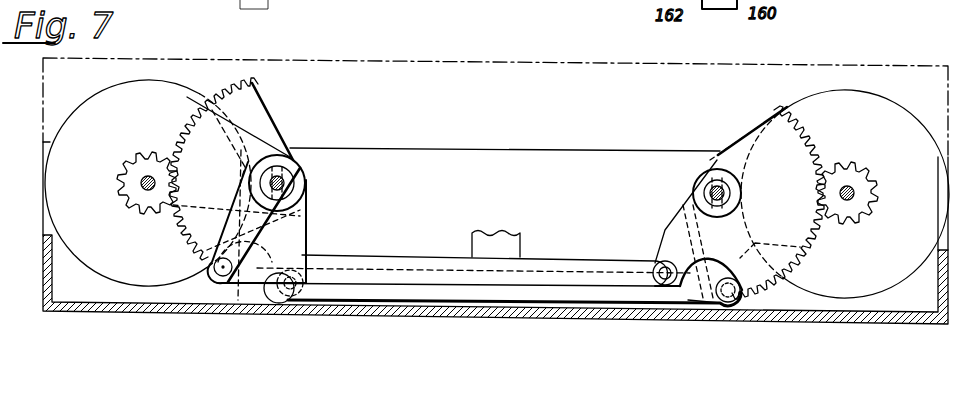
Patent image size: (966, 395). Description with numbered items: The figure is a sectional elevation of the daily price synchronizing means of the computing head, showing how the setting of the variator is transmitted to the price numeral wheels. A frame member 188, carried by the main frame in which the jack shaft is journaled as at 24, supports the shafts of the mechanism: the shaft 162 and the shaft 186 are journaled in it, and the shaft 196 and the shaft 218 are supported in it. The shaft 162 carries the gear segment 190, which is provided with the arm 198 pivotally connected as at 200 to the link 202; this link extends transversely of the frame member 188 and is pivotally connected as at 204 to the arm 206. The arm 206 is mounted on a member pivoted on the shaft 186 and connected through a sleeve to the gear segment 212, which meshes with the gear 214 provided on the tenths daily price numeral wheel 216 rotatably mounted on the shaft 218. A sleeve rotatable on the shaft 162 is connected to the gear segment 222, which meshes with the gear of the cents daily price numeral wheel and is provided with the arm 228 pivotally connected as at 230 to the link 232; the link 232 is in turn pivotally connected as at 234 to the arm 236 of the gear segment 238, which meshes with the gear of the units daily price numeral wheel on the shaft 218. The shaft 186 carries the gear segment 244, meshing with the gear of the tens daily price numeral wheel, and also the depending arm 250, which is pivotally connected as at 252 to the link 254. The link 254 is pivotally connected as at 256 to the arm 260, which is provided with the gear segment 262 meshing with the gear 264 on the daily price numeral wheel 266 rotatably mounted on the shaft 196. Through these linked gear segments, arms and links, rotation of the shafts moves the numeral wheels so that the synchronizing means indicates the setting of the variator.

The tenths daily price numeral wheel 216 is at (58, 133).
The gear 214 is at (130, 163).
The shaft 218 is at (137, 198).
The gear segment 212 is at (177, 147).
The gear segment 238 is at (212, 110).
The arm 206 is at (238, 298).
The gear segment 244 is at (260, 110).
The shaft 186 is at (281, 178).
The depending arm 250 is at (288, 220).
The arm 236 is at (305, 243).
The pivotal connection 252 is at (213, 268).
The link 254 is at (388, 258).
The link 202 is at (448, 273).
The journal 24 is at (495, 238).
The pivotal connection 204 is at (267, 297).
The pivotal connection 234 is at (298, 295).
The frame member 188 is at (417, 312).
The link 232 is at (540, 308).
The pivotal connection 200 is at (707, 310).
The pivotal connection 230 is at (728, 302).
The pivotal connection 256 is at (655, 268).
The arm 198 is at (680, 245).
The arm 260 is at (680, 217).
The arm 228 is at (725, 258).
The gear segment 190 is at (752, 160).
The shaft 162 is at (708, 190).
The gear segment 222 is at (743, 138).
The gear segment 262 is at (802, 180).
The gear 264 is at (857, 183).
The shaft 196 is at (848, 207).
The daily price numeral wheel 266 is at (903, 115).